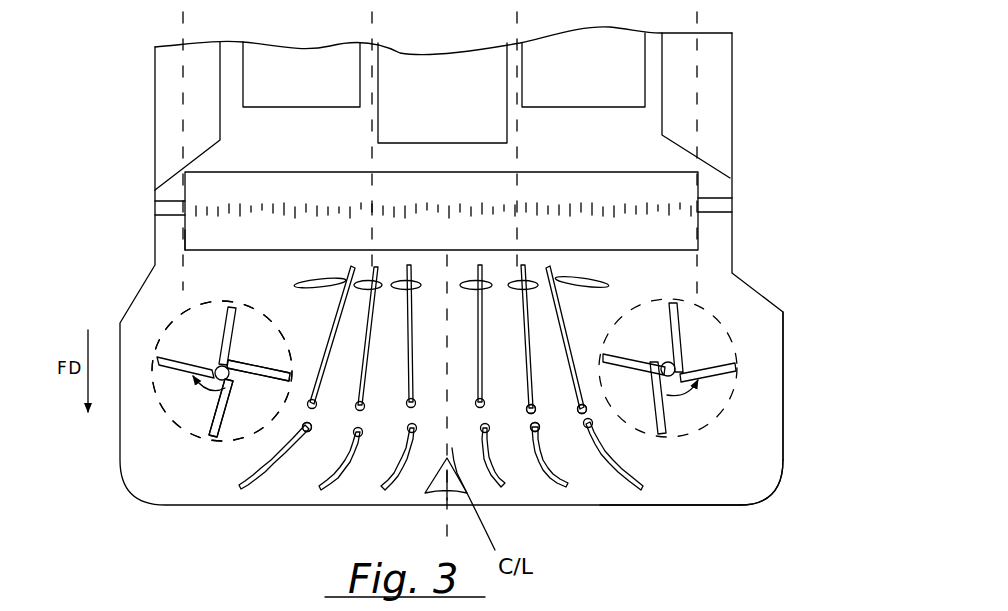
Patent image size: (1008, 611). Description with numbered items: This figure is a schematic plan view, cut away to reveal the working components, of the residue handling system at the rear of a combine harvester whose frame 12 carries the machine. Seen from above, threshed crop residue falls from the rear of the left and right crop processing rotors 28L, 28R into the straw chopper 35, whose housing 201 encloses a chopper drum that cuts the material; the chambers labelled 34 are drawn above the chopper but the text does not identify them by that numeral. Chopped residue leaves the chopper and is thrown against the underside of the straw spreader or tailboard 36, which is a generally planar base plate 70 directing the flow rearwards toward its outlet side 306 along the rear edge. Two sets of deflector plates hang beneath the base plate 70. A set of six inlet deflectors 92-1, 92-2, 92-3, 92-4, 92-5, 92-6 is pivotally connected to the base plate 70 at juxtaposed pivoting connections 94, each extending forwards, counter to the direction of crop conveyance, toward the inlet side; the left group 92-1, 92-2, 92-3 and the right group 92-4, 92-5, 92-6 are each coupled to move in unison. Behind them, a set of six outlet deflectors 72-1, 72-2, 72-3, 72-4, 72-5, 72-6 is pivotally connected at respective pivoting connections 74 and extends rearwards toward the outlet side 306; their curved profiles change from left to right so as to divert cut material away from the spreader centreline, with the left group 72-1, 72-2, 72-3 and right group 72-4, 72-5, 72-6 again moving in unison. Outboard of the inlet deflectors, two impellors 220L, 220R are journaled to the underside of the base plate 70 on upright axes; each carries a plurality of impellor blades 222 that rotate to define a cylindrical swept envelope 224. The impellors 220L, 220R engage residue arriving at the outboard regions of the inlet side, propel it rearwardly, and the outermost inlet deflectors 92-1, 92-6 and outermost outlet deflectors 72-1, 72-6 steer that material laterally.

The frame 12 is at (733, 127).
The left-hand crop processing rotor 28L is at (243, 68).
The right-hand crop processing rotor 28R is at (650, 67).
The chamber 34 is at (323, 160).
The straw chopper 35 is at (747, 200).
The housing 201 is at (185, 236).
The left impellor 220L is at (225, 322).
The right impellor 220R is at (678, 362).
The impellor blades 222 is at (255, 367).
The cylindrical swept envelope 224 is at (170, 413).
The straw spreader 36 is at (788, 368).
The base plate 70 is at (770, 407).
The outlet side 306 is at (677, 505).
The inlet deflector 92-1 is at (343, 313).
The inlet deflector 92-2 is at (363, 352).
The inlet deflector 92-3 is at (403, 341).
The inlet deflector 92-4 is at (481, 337).
The inlet deflector 92-5 is at (526, 384).
The inlet deflector 92-6 is at (562, 331).
The pivoting connections 94 is at (579, 407).
The pivoting connections 74 is at (311, 426).
The outlet deflector 72-1 is at (257, 473).
The outlet deflector 72-2 is at (322, 492).
The outlet deflector 72-3 is at (396, 492).
The outlet deflector 72-4 is at (503, 490).
The outlet deflector 72-5 is at (567, 490).
The outlet deflector 72-6 is at (643, 480).